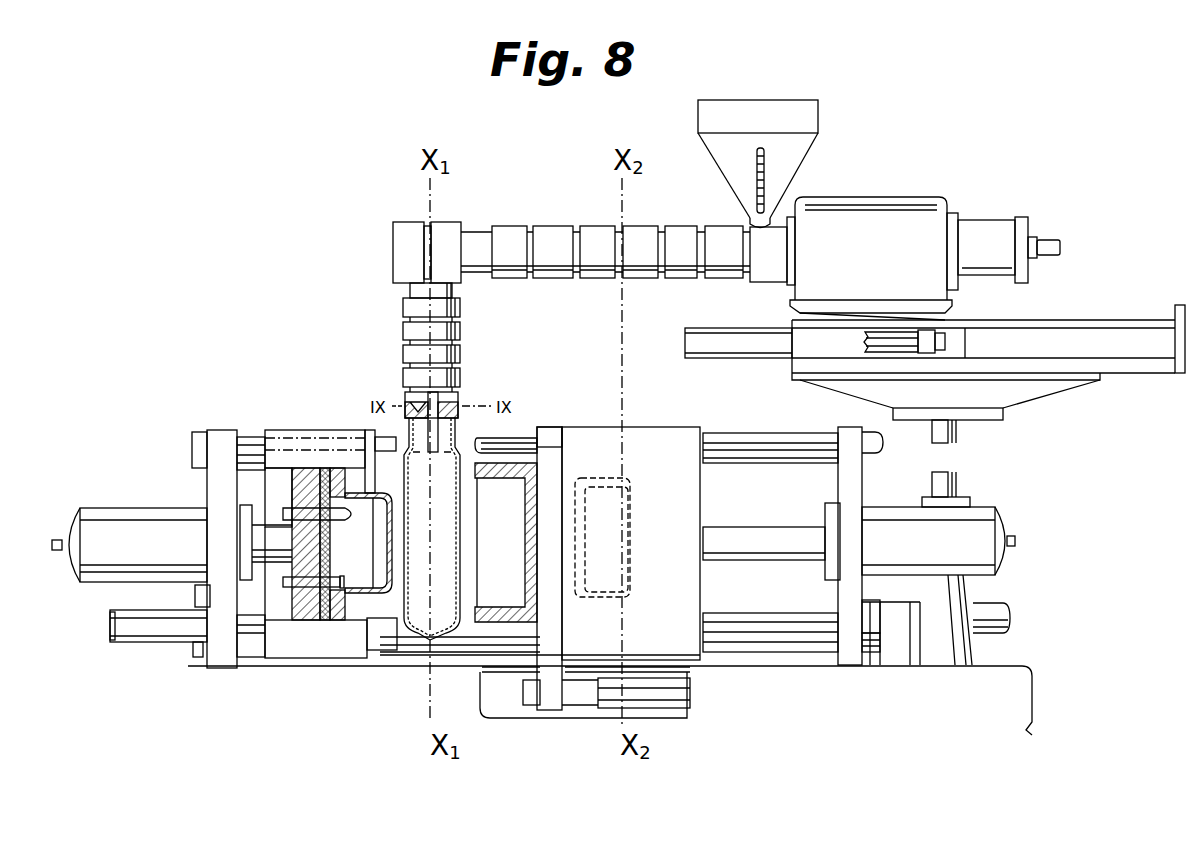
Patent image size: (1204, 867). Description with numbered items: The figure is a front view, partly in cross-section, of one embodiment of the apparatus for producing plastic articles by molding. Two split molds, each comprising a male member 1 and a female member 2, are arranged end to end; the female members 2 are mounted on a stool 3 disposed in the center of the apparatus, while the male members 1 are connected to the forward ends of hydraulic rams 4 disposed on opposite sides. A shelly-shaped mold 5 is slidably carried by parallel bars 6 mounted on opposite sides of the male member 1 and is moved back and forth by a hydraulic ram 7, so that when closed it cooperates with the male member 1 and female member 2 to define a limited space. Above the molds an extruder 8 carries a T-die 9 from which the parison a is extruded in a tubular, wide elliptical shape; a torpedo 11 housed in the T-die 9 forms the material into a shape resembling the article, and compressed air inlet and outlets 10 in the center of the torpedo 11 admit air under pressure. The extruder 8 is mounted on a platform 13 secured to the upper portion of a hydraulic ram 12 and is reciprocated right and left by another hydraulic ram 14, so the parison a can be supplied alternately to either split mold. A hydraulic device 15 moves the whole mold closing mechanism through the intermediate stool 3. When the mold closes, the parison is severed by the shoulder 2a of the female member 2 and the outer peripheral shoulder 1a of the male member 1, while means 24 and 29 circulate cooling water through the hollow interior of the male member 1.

The male member 1 is at (615, 532).
The outer peripheral shoulder 1a is at (357, 475).
The female member 2 is at (540, 470).
The shoulder 2a is at (477, 625).
The stool 3 is at (548, 434).
The hydraulic ram 4 is at (772, 545).
The shelly-shaped mold 5 is at (303, 458).
The bars 6 is at (255, 442).
The hydraulic ram 7 is at (248, 462).
The extruder 8 is at (505, 233).
The T-die 9 is at (457, 399).
The compressed air inlet and outlets 10 is at (466, 405).
The torpedo 11 is at (422, 409).
The hydraulic ram 12 is at (960, 432).
The platform 13 is at (1142, 343).
The hydraulic ram 14 is at (900, 340).
The hydraulic device 15 is at (610, 693).
The cooling water circulating means 24 is at (283, 575).
The cooling water circulating means 29 is at (311, 545).
The parison a is at (457, 438).